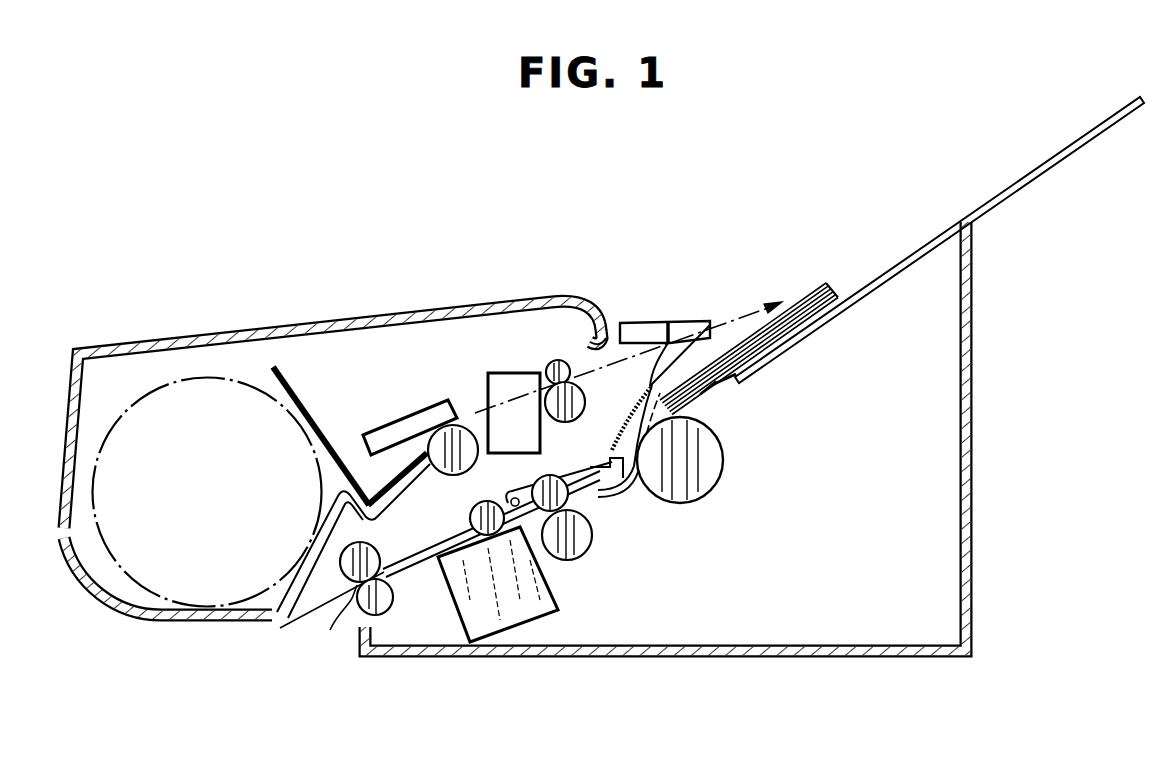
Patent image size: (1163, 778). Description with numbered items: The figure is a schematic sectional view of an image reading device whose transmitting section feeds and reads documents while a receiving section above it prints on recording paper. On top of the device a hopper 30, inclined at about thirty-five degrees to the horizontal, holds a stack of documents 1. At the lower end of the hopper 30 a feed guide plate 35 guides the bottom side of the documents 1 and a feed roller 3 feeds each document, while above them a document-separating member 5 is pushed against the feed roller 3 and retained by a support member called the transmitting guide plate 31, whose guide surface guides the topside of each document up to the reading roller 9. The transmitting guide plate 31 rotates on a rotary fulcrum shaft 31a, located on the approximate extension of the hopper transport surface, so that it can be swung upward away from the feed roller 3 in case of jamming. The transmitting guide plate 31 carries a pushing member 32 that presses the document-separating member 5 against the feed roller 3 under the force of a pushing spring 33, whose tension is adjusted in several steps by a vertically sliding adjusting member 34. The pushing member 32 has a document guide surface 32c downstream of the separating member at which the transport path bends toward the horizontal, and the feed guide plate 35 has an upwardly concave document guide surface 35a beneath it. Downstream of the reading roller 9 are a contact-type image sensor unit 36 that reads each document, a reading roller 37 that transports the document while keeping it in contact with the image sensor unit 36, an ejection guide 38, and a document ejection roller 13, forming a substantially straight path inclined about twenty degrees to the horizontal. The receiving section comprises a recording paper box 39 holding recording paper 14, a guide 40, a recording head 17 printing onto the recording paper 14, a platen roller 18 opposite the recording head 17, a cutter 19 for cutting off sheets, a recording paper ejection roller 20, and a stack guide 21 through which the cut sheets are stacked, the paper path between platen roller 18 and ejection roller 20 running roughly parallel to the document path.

The documents 1 is at (840, 282).
The feed roller 3 is at (724, 463).
The document-separating member 5 is at (708, 397).
The reading roller 9 is at (538, 480).
The document ejection roller 13 is at (330, 630).
The recording paper 14 is at (132, 417).
The recording head 17 is at (404, 422).
The platen roller 18 is at (454, 424).
The cutter 19 is at (512, 386).
The recording paper ejection roller 20 is at (556, 362).
The stack guide 21 is at (666, 322).
The hopper 30 is at (986, 200).
The transmitting guide plate 31 is at (719, 326).
The rotary fulcrum shaft 31a is at (562, 545).
The pushing member 32 is at (608, 492).
The document guide surface 32c is at (632, 482).
The pushing spring 33 is at (618, 422).
The adjusting member 34 is at (608, 336).
The feed guide plate 35 is at (724, 386).
The document guide surface 35a is at (627, 494).
The contact-type image sensor unit 36 is at (505, 630).
The reading roller 37 is at (470, 513).
The ejection guide 38 is at (395, 566).
The recording paper box 39 is at (170, 618).
The guide 40 is at (292, 386).